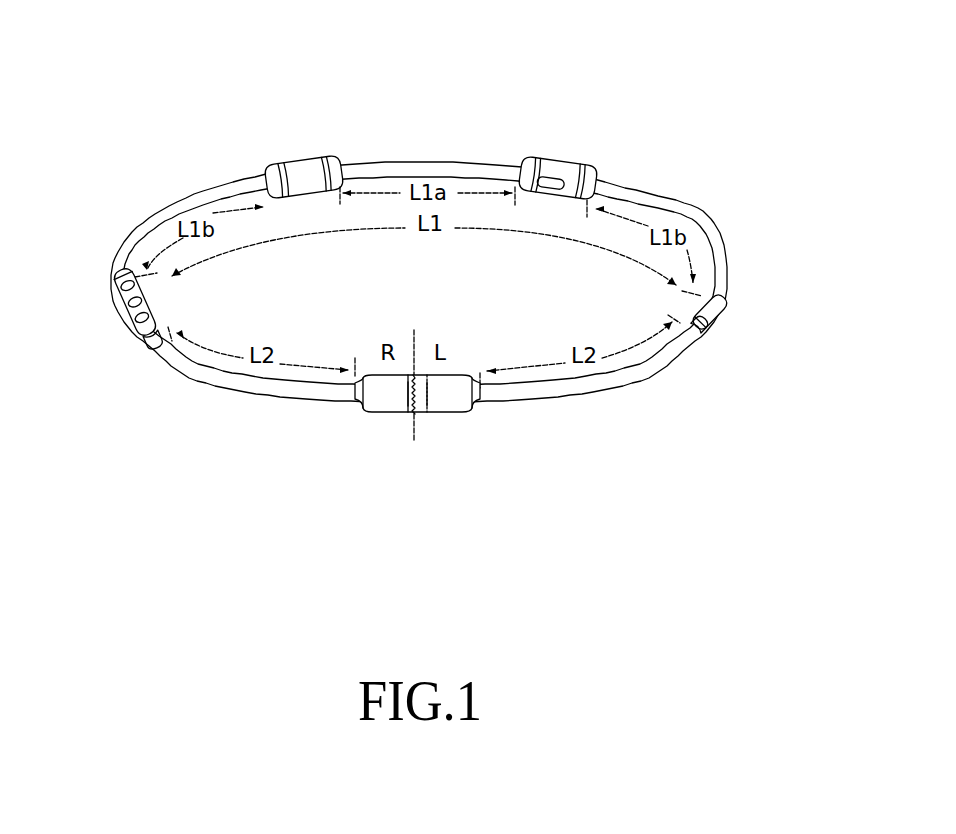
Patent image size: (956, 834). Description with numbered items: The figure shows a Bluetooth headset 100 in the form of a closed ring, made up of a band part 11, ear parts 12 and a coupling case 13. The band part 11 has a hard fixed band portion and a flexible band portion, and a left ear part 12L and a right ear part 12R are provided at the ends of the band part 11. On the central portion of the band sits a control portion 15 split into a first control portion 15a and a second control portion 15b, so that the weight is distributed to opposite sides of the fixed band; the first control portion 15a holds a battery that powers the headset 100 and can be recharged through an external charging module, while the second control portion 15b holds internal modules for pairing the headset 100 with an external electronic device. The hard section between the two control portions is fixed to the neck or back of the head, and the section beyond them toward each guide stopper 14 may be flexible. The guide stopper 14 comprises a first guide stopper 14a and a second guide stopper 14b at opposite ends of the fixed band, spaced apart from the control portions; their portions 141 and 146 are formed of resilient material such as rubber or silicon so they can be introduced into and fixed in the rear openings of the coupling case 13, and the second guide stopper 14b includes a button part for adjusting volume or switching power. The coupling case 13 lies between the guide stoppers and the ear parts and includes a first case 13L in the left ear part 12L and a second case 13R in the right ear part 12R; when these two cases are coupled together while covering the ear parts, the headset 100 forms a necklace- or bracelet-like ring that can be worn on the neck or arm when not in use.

The Bluetooth headset 100 is at (82, 97).
The band part 11 is at (191, 190).
The ear parts 12 is at (370, 497).
The right ear part 12R is at (357, 400).
The left ear part 12L is at (470, 402).
The coupling case 13 is at (419, 472).
The second case 13R is at (394, 406).
The first case 13L is at (448, 406).
The guide stopper 14 is at (777, 351).
The first guide stopper 14a is at (120, 308).
The second guide stopper 14b is at (719, 308).
The resilient portion of first guide stopper 141 is at (142, 345).
The resilient portion of second guide stopper 146 is at (705, 330).
The control portion 15 is at (288, 60).
The first control portion 15a is at (303, 174).
The second control portion 15b is at (551, 174).